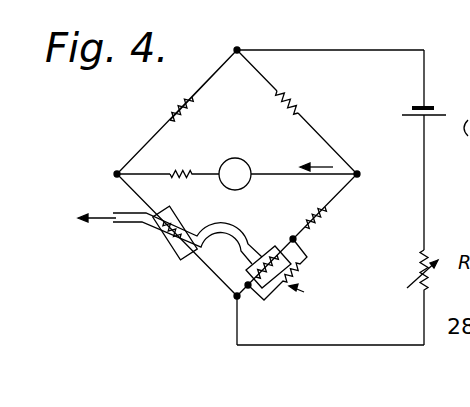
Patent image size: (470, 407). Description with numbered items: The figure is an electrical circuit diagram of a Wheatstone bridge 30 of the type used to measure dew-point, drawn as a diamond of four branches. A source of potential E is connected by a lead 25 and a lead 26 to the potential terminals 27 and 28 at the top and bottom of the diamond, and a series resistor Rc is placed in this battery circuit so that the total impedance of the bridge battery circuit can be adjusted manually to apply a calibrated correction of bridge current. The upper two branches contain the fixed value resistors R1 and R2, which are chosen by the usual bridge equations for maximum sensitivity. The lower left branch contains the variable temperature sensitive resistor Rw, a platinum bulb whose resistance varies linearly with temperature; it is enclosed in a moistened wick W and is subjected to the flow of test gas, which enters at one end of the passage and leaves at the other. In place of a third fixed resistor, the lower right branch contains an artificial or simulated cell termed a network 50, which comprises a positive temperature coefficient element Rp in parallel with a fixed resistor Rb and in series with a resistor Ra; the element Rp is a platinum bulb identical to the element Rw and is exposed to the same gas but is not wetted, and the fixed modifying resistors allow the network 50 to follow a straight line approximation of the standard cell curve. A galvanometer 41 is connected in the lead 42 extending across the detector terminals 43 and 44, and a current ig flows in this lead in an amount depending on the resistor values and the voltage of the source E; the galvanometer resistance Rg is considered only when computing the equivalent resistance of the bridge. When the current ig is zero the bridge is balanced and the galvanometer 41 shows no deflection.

The lead 25 is at (366, 49).
The lead 26 is at (336, 346).
The potential terminal 27 is at (242, 42).
The potential terminal 28 is at (232, 298).
The Wheatstone bridge 30 is at (246, 117).
The galvanometer 41 is at (237, 159).
The lead 42 is at (147, 173).
The detector terminal 43 is at (115, 174).
The detector terminal 44 is at (358, 174).
The network 50 is at (291, 236).
The source of potential E is at (440, 113).
The fixed value resistor R1 is at (302, 101).
The fixed value resistor R2 is at (168, 112).
The temperature sensitive element Rw is at (163, 207).
The galvanometer resistance Rg is at (183, 180).
The positive temperature coefficient element Rp is at (267, 249).
The resistor Ra is at (330, 222).
The fixed resistor Rb is at (305, 269).
The series resistor Rc is at (411, 297).
The moistened wick W is at (169, 254).
The galvanometer current ig is at (302, 168).